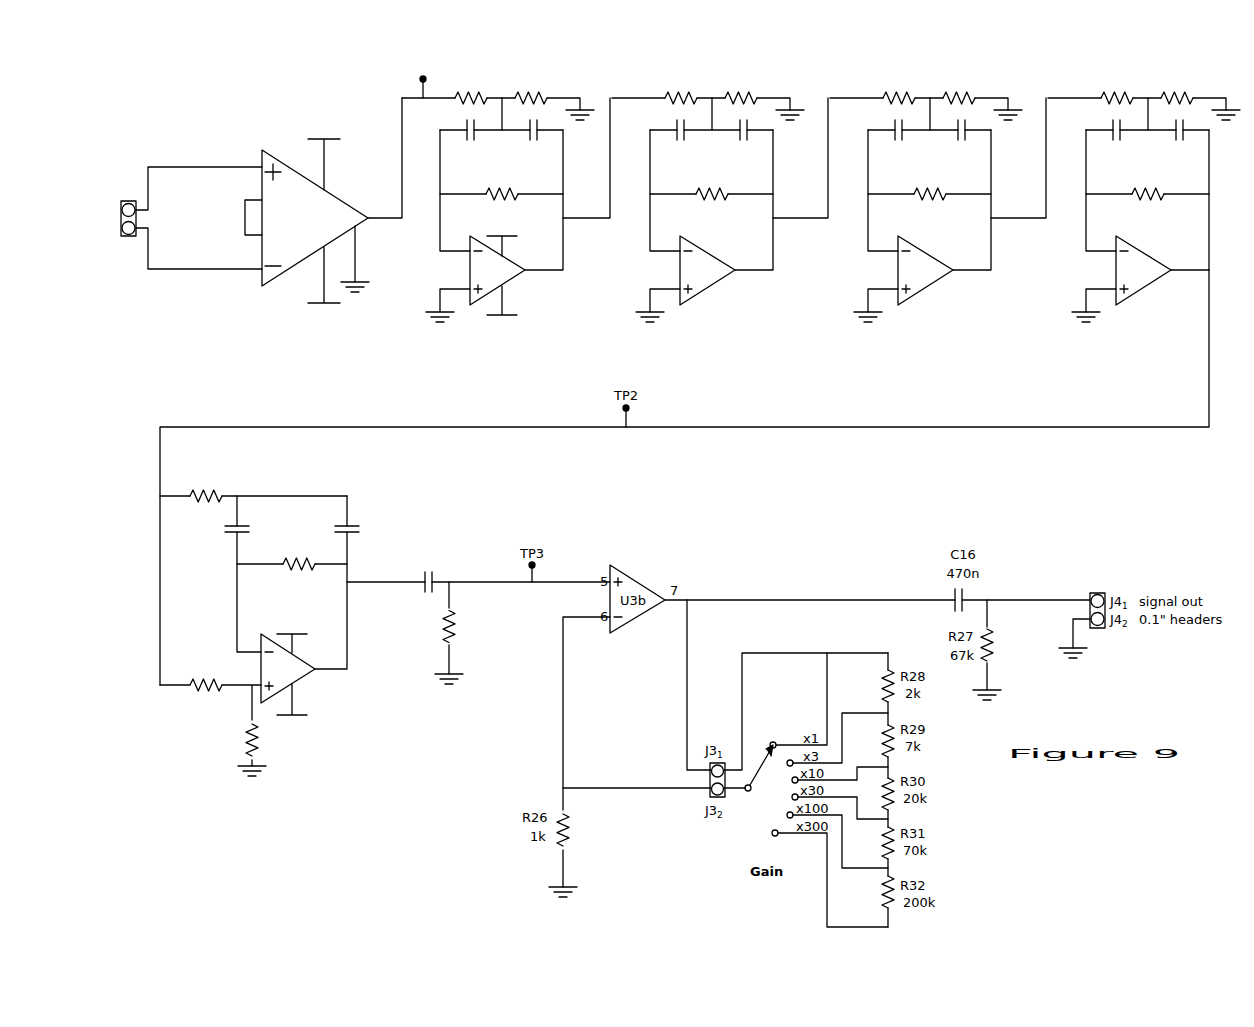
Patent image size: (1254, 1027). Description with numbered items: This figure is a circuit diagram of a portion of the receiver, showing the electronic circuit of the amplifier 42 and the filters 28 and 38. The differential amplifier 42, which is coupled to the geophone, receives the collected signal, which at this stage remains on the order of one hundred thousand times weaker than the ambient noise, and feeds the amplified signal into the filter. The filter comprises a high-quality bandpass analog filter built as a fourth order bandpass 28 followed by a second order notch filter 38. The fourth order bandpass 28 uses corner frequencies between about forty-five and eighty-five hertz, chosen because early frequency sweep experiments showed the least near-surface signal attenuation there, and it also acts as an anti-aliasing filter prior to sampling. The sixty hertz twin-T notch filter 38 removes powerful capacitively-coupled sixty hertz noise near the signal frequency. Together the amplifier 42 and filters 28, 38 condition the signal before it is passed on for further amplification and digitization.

The differential amplifier 42 is at (236, 212).
The fourth order bandpass filter 28 is at (821, 211).
The second order notch filter 38 is at (385, 638).